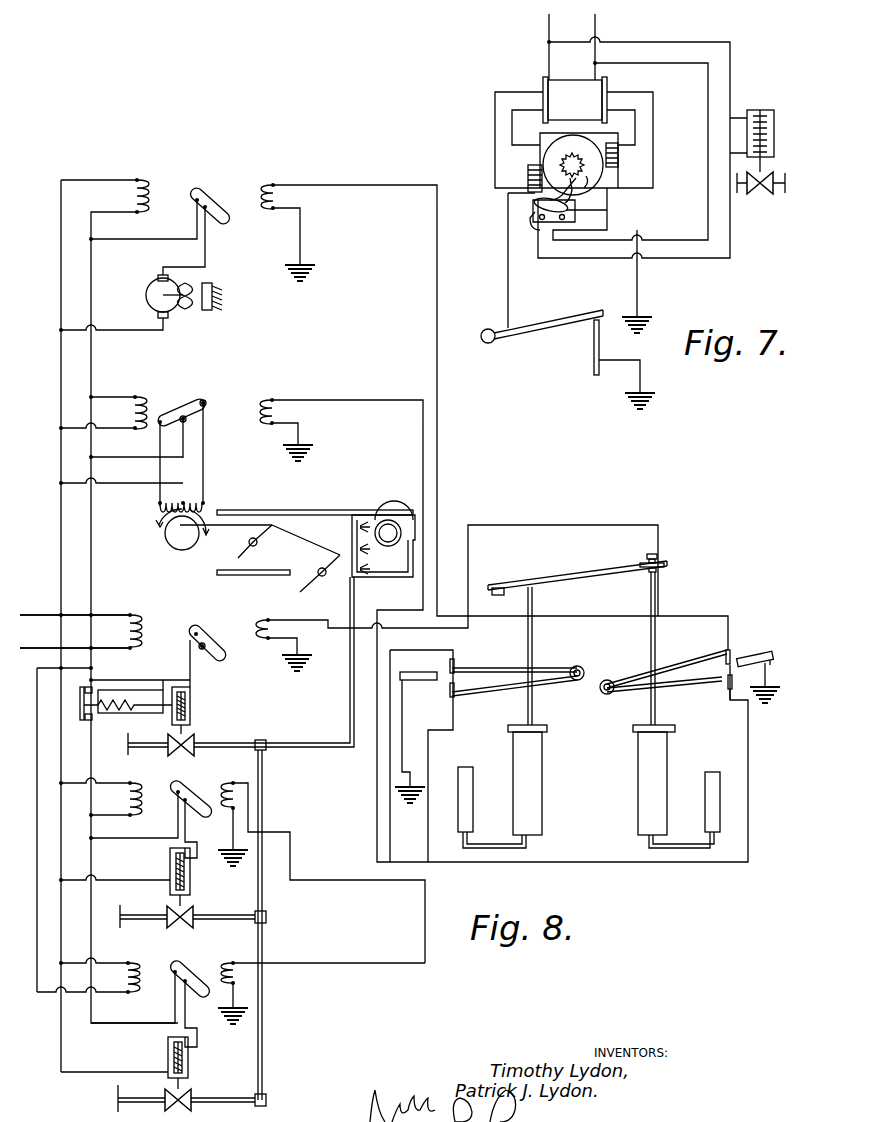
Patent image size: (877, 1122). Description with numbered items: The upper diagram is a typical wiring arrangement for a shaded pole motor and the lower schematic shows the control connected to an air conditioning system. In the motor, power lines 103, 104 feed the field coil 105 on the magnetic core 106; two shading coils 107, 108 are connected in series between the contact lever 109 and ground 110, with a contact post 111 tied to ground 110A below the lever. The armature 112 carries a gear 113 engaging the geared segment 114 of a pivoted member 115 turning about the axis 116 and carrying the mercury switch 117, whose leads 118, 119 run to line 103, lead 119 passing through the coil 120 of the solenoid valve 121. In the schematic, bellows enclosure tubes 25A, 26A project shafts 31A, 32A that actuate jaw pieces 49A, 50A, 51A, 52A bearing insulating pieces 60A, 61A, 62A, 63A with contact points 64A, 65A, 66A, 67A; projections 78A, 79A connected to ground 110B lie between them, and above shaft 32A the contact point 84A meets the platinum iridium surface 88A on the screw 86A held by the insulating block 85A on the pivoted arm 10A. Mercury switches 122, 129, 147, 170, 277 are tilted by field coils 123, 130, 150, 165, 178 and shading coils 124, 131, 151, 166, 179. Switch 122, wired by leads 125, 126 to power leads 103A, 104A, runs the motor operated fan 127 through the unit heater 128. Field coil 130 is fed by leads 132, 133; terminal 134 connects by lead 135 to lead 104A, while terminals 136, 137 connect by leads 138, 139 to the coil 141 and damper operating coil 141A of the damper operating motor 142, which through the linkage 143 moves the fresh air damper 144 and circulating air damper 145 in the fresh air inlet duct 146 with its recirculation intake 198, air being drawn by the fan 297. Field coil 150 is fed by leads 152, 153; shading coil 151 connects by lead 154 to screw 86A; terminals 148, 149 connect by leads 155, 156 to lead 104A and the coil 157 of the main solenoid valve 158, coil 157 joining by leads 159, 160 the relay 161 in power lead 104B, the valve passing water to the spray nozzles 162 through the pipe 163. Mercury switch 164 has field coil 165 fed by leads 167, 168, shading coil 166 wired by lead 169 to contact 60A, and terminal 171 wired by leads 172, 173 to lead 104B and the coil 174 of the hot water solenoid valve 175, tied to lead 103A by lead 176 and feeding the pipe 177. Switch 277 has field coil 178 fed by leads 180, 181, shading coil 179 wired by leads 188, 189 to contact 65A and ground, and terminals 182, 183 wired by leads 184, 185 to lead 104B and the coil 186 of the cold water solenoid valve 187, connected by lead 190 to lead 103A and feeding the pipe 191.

In FIG. 7, the power line 103 is at (548, 30).
In FIG. 7, the power line 104 is at (597, 22).
In FIG. 7, the field coil 105 is at (575, 93).
In FIG. 7, the magnetic core 106 is at (648, 130).
In FIG. 7, the shading coil 107 is at (618, 155).
In FIG. 7, the shading coil 108 is at (528, 178).
In FIG. 7, the gear 113 is at (563, 158).
In FIG. 7, the geared segment 114 is at (563, 190).
In FIG. 7, the armature 112 is at (586, 190).
In FIG. 7, the mercury switch 117 is at (585, 218).
In FIG. 7, the pivoted member 115 is at (560, 223).
In FIG. 7, the axis 116 is at (528, 232).
In FIG. 7, the lead 118 is at (652, 240).
In FIG. 7, the lead 119 is at (710, 268).
In FIG. 7, the coil 120 is at (773, 132).
In FIG. 7, the solenoid valve 121 is at (758, 196).
In FIG. 7, the contact lever 109 is at (596, 310).
In FIG. 7, the ground 110 is at (645, 312).
In FIG. 7, the contact post 111 is at (594, 352).
In FIG. 7, the ground 110A is at (650, 405).
In FIG. 8, the power lead 103A is at (61, 236).
In FIG. 8, the power lead 104A is at (91, 278).
In FIG. 8, the power lead 104B is at (91, 763).
In FIG. 8, the field coil 123 is at (139, 180).
In FIG. 8, the lead 125 is at (108, 239).
In FIG. 8, the mercury switch 122 is at (201, 188).
In FIG. 8, the lead 126 is at (205, 262).
In FIG. 8, the motor operated fan 127 is at (170, 316).
In FIG. 8, the unit heater 128 is at (213, 283).
In FIG. 8, the shading coil 124 is at (273, 185).
In FIG. 8, the lead 132 is at (100, 397).
In FIG. 8, the field coil 130 is at (137, 396).
In FIG. 8, the lead 133 is at (105, 426).
In FIG. 8, the mercury switch 129 is at (195, 400).
In FIG. 8, the terminal 137 is at (206, 405).
In FIG. 8, the terminal 134 is at (188, 422).
In FIG. 8, the terminal 136 is at (160, 426).
In FIG. 8, the lead 135 is at (103, 470).
In FIG. 8, the lead 138 is at (160, 478).
In FIG. 8, the lead 139 is at (203, 480).
In FIG. 8, the coil 141 is at (205, 505).
In FIG. 8, the damper operating coil 141A is at (158, 506).
In FIG. 8, the damper operating motor 142 is at (175, 550).
In FIG. 8, the linkage 143 is at (210, 535).
In FIG. 8, the fresh air damper 144 is at (245, 555).
In FIG. 8, the circulating air damper 145 is at (310, 592).
In FIG. 8, the fresh air inlet duct 146 is at (310, 520).
In FIG. 8, the recirculation intake 198 is at (300, 580).
In FIG. 8, the shading coil 131 is at (272, 400).
In FIG. 8, the ground 110B is at (305, 462).
In FIG. 8, the fan 297 is at (388, 520).
In FIG. 8, the spray nozzles 162 is at (370, 562).
In FIG. 8, the lead 152 is at (100, 612).
In FIG. 8, the field coil 150 is at (133, 614).
In FIG. 8, the lead 153 is at (100, 655).
In FIG. 8, the mercury switch 147 is at (222, 628).
In FIG. 8, the terminal 148 is at (174, 663).
In FIG. 8, the terminal 149 is at (206, 648).
In FIG. 8, the shading coil 151 is at (268, 620).
In FIG. 8, the lead 154 is at (305, 622).
In FIG. 8, the lead 155 is at (125, 680).
In FIG. 8, the lead 159 is at (112, 690).
In FIG. 8, the relay 161 is at (92, 718).
In FIG. 8, the lead 160 is at (140, 705).
In FIG. 8, the lead 156 is at (190, 697).
In FIG. 8, the coil 157 is at (185, 710).
In FIG. 8, the solenoid valve 158 is at (192, 742).
In FIG. 8, the pipe 163 is at (208, 752).
In FIG. 8, the lead 167 is at (96, 790).
In FIG. 8, the field coil 165 is at (132, 817).
In FIG. 8, the lead 168 is at (105, 808).
In FIG. 8, the mercury switch 170 is at (172, 790).
In FIG. 8, the mercury switch 164 is at (194, 784).
In FIG. 8, the terminal 171 is at (190, 812).
In FIG. 8, the lead 172 is at (112, 840).
In FIG. 8, the lead 173 is at (197, 850).
In FIG. 8, the lead 176 is at (105, 880).
In FIG. 8, the coil 174 is at (184, 876).
In FIG. 8, the shading coil 166 is at (232, 770).
In FIG. 8, the lead 169 is at (250, 812).
In FIG. 8, the solenoid valve 175 is at (167, 914).
In FIG. 8, the pipe 177 is at (210, 928).
In FIG. 8, the lead 180 is at (106, 950).
In FIG. 8, the field coil 178 is at (130, 962).
In FIG. 8, the lead 181 is at (98, 1000).
In FIG. 8, the mercury switch 277 is at (183, 966).
In FIG. 8, the terminal 182 is at (160, 983).
In FIG. 8, the terminal 183 is at (180, 995).
In FIG. 8, the lead 184 is at (105, 1032).
In FIG. 8, the lead 185 is at (197, 1040).
In FIG. 8, the lead 190 is at (85, 1072).
In FIG. 8, the coil 186 is at (182, 1062).
In FIG. 8, the shading coil 179 is at (235, 985).
In FIG. 8, the lead 189 is at (240, 1000).
In FIG. 8, the lead 188 is at (318, 965).
In FIG. 8, the solenoid valve 187 is at (188, 1092).
In FIG. 8, the pipe 191 is at (208, 1108).
In FIG. 8, the pivoted arm 10A is at (562, 573).
In FIG. 8, the insulating block 85A is at (655, 554).
In FIG. 8, the screw 86A is at (664, 563).
In FIG. 8, the platinum iridium surface 88A is at (656, 572).
In FIG. 8, the contact point 84A is at (651, 580).
In FIG. 8, the projection 78A is at (400, 652).
In FIG. 8, the contact point 64A is at (428, 666).
In FIG. 8, the insulating piece 60A is at (456, 665).
In FIG. 8, the jaw piece 49A is at (490, 668).
In FIG. 8, the contact point 65A is at (450, 690).
In FIG. 8, the insulating piece 61A is at (462, 698).
In FIG. 8, the jaw piece 50A is at (500, 690).
In FIG. 8, the shaft 31A is at (532, 705).
In FIG. 8, the bellows enclosure tube 25A is at (535, 785).
In FIG. 8, the bellows enclosure tube 26A is at (640, 795).
In FIG. 8, the jaw piece 51A is at (660, 670).
In FIG. 8, the jaw piece 52A is at (665, 690).
In FIG. 8, the shaft 32A is at (655, 707).
In FIG. 8, the insulating piece 62A is at (730, 650).
In FIG. 8, the contact point 66A is at (765, 655).
In FIG. 8, the projection 79A is at (776, 668).
In FIG. 8, the insulating piece 63A is at (726, 700).
In FIG. 8, the contact point 67A is at (732, 682).